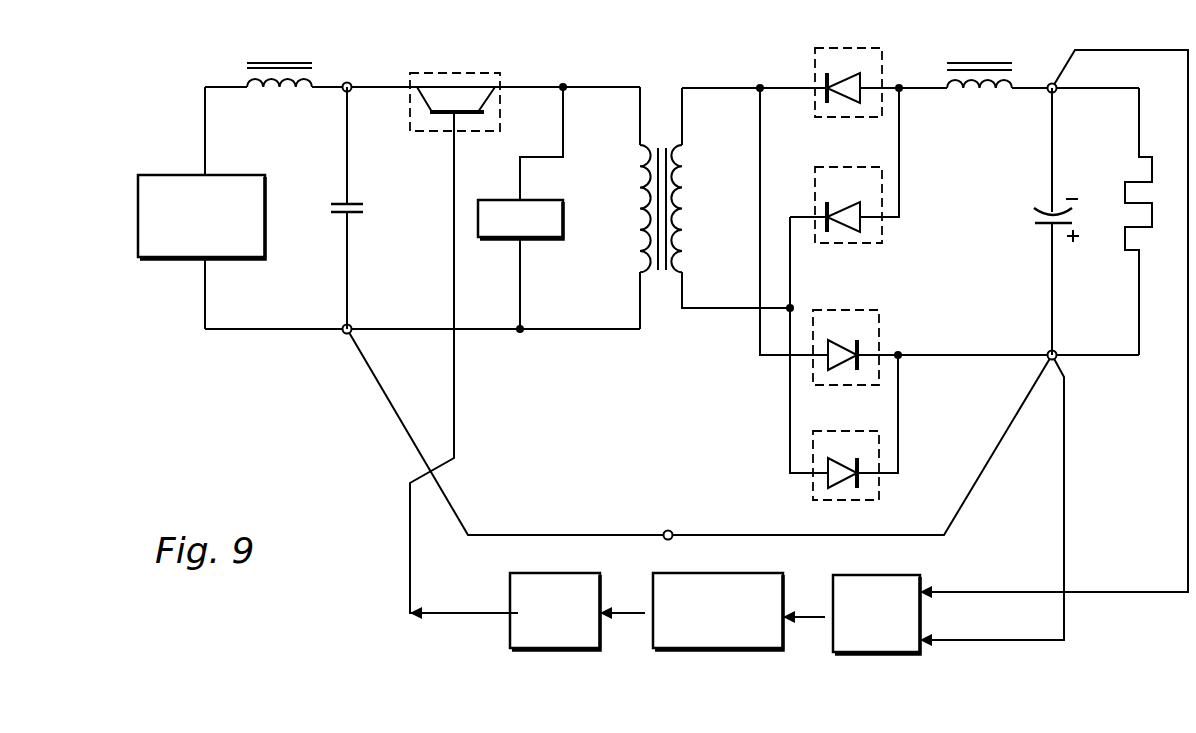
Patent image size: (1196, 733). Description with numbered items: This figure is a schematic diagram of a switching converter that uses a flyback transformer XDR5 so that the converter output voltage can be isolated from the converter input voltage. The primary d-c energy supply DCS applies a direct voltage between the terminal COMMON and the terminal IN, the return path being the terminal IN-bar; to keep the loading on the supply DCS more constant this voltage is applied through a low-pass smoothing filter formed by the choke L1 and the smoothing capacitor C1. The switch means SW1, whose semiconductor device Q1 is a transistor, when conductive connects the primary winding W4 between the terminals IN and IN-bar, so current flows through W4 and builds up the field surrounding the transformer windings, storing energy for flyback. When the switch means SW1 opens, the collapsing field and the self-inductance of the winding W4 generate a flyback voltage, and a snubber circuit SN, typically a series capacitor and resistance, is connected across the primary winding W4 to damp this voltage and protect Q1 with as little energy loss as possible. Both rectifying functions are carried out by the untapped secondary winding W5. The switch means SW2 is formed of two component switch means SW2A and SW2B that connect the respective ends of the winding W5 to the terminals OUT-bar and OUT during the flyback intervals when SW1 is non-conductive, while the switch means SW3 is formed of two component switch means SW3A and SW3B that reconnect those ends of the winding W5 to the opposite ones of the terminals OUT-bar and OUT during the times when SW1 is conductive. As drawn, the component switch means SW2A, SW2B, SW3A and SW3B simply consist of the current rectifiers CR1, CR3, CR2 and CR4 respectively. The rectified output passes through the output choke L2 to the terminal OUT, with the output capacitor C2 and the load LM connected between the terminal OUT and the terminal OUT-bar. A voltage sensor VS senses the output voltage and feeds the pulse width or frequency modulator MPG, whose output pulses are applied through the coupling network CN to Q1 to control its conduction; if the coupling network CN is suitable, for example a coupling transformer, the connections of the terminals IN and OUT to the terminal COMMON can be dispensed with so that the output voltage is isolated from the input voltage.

The primary d-c energy supply DCS is at (238, 175).
The choke L1 is at (279, 64).
The terminal IN is at (350, 83).
The terminal IN-bar is at (343, 332).
The smoothing capacitor C1 is at (359, 208).
The switch means SW1 is at (500, 73).
The semiconductor device Q1 is at (456, 99).
The snubber circuit SN is at (537, 237).
The flyback transformer XDR5 is at (662, 171).
The primary winding W4 is at (622, 142).
The secondary winding W5 is at (692, 142).
The component switch means SW3A is at (862, 48).
The current rectifier CR2 is at (843, 80).
The component switch means SW2A is at (882, 238).
The current rectifier CR1 is at (843, 206).
The component switch means SW2B is at (879, 327).
The current rectifier CR3 is at (841, 345).
The component switch means SW3B is at (879, 488).
The current rectifier CR4 is at (841, 464).
The output choke L2 is at (979, 65).
The terminal OUT is at (1048, 92).
The terminal OUT-bar is at (1040, 333).
The output capacitor C2 is at (1045, 221).
The load LM is at (1152, 157).
The terminal COMMON is at (665, 531).
The coupling network CN is at (580, 573).
The modulator MPG is at (750, 573).
The voltage sensor VS is at (890, 575).